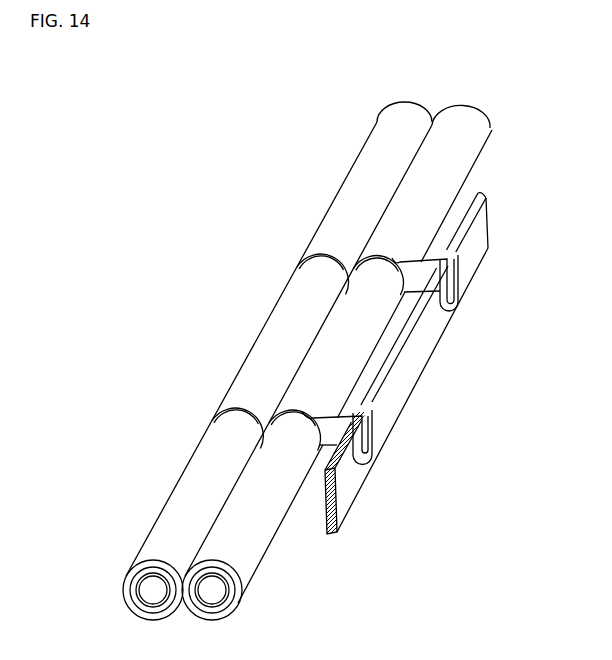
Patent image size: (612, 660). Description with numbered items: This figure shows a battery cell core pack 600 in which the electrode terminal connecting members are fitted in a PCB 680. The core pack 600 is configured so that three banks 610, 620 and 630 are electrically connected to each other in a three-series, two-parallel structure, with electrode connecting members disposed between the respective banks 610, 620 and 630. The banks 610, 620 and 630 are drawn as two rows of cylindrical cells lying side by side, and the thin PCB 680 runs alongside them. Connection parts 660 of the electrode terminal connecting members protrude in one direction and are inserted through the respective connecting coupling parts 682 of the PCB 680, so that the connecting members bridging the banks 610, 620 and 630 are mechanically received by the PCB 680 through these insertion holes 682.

The battery cell core pack 600 is at (116, 121).
The bank 610 is at (345, 181).
The bank 620 is at (233, 388).
The bank 630 is at (190, 460).
The connection part 660 is at (335, 415).
The PCB 680 is at (428, 383).
The connecting coupling part 682 is at (370, 447).